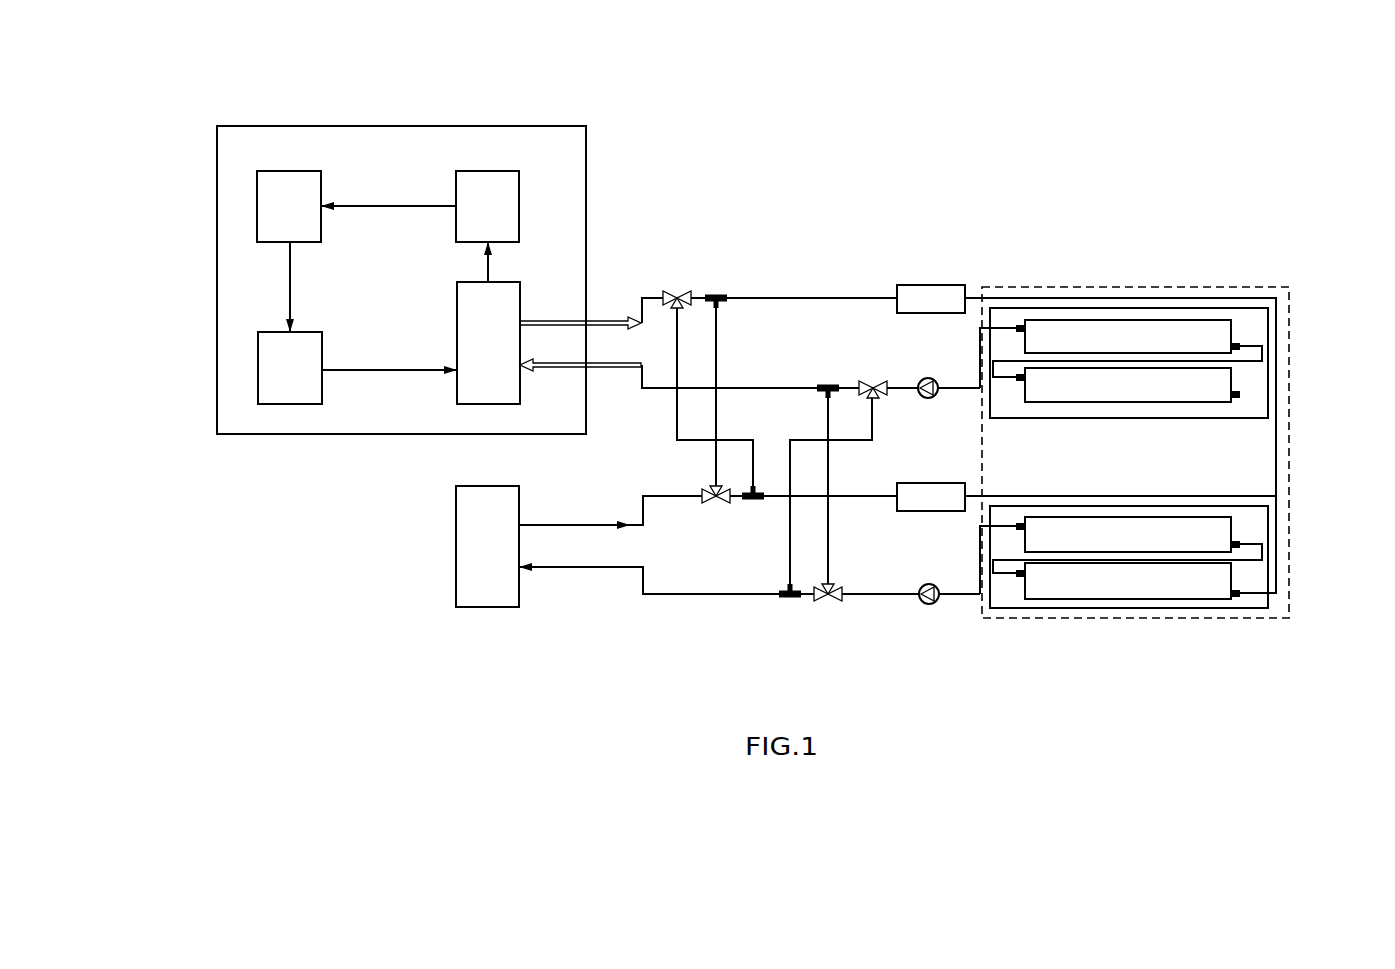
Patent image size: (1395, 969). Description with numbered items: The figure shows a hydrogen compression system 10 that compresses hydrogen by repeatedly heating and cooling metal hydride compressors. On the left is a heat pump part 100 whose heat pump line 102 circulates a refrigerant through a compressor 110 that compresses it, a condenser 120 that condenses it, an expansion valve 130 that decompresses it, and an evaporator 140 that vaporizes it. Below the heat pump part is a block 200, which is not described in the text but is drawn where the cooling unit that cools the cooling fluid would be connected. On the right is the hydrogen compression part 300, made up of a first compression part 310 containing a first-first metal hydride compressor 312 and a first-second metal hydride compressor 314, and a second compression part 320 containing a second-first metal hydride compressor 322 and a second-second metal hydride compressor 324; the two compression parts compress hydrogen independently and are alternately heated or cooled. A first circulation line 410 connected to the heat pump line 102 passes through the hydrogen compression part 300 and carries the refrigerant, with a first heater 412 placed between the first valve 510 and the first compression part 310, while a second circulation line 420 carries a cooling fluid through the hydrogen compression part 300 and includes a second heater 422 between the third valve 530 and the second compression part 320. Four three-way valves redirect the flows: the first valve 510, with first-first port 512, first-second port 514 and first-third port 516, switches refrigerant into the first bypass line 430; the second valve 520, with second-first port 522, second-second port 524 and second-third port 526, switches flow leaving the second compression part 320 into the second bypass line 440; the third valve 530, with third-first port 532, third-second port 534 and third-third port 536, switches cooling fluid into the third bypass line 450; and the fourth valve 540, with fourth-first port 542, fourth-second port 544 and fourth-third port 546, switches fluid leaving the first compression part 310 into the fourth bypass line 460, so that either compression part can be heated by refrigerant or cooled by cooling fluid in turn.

The hydrogen compression system 10 is at (250, 89).
The heat pump part 100 is at (586, 172).
The heat pump line 102 is at (488, 268).
The compressor 110 is at (258, 357).
The condenser 120 is at (456, 392).
The expansion valve 130 is at (498, 171).
The evaporator 140 is at (300, 171).
The heat exchanger 200 is at (484, 607).
The hydrogen compression part 300 is at (1235, 618).
The first compression part 310 is at (1168, 312).
The first-first metal hydride compressor 312 is at (1233, 373).
The first-second metal hydride compressor 314 is at (1233, 327).
The second compression part 320 is at (1168, 599).
The second-first metal hydride compressor 322 is at (1233, 573).
The second-second metal hydride compressor 324 is at (1233, 525).
The first circulation line 410 is at (802, 298).
The first heater 412 is at (930, 285).
The second circulation line 420 is at (848, 494).
The second heater 422 is at (966, 489).
The first bypass line 430 is at (697, 440).
The second bypass line 440 is at (830, 515).
The third bypass line 450 is at (717, 335).
The fourth bypass line 460 is at (789, 552).
The first valve 510 is at (681, 303).
The first-first port 512 is at (666, 294).
The first-second port 514 is at (682, 306).
The first-third port 516 is at (673, 310).
The second valve 520 is at (865, 618).
The second-first port 522 is at (841, 598).
The second-second port 524 is at (818, 600).
The second-third port 526 is at (829, 583).
The third valve 530 is at (708, 501).
The third-first port 532 is at (703, 494).
The third-second port 534 is at (727, 499).
The third-third port 536 is at (722, 485).
The fourth valve 540 is at (886, 391).
The fourth-first port 542 is at (886, 390).
The fourth-second port 544 is at (861, 384).
The fourth-third port 546 is at (875, 400).